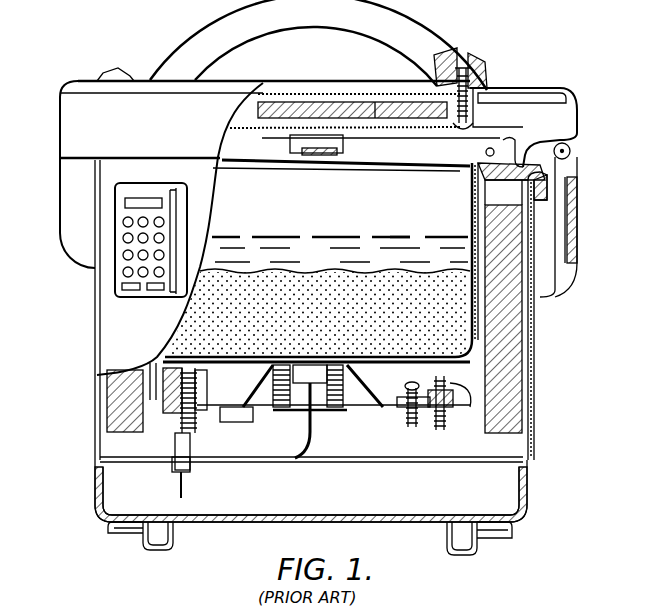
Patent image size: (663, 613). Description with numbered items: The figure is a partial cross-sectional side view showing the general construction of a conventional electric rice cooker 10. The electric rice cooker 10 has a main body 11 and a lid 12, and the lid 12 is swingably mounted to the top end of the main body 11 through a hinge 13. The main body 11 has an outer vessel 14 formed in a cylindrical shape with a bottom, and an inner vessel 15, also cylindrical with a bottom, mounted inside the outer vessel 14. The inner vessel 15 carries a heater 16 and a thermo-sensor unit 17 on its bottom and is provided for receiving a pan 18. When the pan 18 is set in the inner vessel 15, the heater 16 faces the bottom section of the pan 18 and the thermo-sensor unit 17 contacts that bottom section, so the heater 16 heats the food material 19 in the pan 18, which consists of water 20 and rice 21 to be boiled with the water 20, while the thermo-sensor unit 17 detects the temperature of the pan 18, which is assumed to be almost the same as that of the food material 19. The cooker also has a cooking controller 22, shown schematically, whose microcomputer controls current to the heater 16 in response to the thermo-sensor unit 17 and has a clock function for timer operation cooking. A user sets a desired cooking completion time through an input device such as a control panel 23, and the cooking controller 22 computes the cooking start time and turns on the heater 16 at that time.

The electric rice cooker 10 is at (82, 310).
The main body 11 is at (537, 373).
The lid 12 is at (550, 88).
The hinge 13 is at (580, 153).
The outer vessel 14 is at (533, 348).
The inner vessel 15 is at (466, 390).
The heater 16 is at (468, 407).
The thermo-sensor unit 17 is at (323, 415).
The pan 18 is at (245, 354).
The food material 19 is at (290, 233).
The water 20 is at (395, 235).
The rice 21 is at (335, 270).
The cooking controller 22 is at (243, 413).
The control panel 23 is at (150, 203).